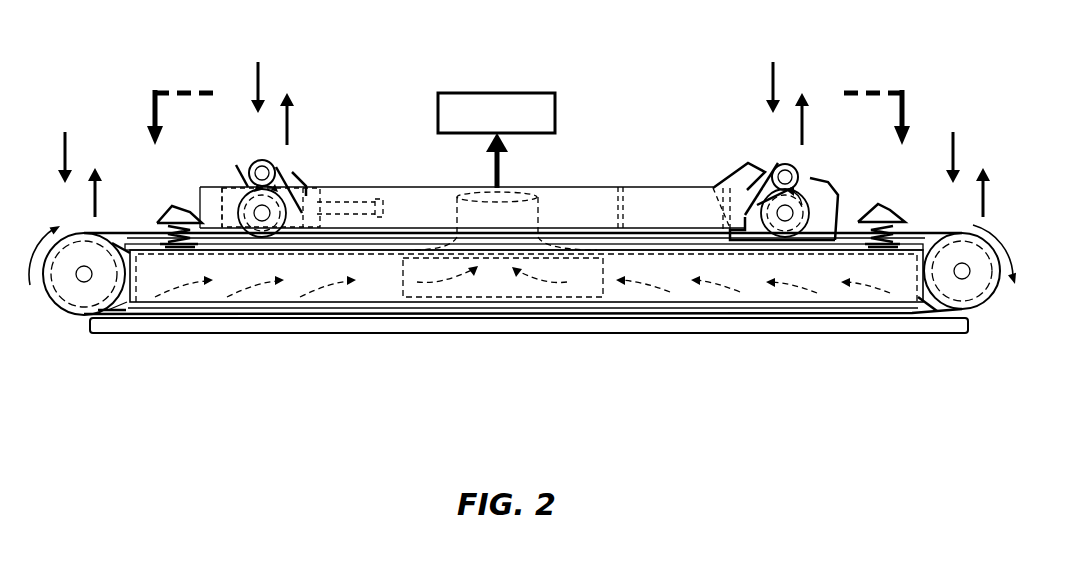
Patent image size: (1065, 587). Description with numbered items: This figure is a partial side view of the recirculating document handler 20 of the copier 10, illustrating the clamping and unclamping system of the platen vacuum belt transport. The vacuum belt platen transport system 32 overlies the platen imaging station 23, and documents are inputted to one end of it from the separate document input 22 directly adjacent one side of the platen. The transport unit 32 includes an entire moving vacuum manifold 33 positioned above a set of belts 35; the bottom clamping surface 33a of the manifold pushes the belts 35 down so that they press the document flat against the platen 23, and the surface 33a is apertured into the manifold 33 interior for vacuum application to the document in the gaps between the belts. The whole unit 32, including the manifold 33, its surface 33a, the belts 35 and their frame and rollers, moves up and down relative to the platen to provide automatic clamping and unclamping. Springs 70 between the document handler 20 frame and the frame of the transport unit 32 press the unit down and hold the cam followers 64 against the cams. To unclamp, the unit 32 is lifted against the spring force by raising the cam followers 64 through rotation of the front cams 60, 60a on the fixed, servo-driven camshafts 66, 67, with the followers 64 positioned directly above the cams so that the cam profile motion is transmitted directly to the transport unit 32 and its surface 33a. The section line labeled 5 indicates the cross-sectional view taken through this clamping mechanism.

The copier 10 is at (133, 372).
The recirculating document handler 20 is at (401, 60).
The document input 22 is at (986, 313).
The platen imaging station 23 is at (318, 323).
The vacuum belt platen transport system 32 is at (655, 165).
The vacuum manifold 33 is at (622, 295).
The clamping surface 33a is at (740, 305).
The belts 35 is at (935, 305).
The section line 5- 5 is at (528, 131).
The front cam 60 is at (268, 193).
The front cam 60a is at (807, 190).
The cam followers 64 is at (265, 162).
The camshaft 66 is at (260, 213).
The camshaft 67 is at (787, 213).
The springs 70 is at (163, 222).